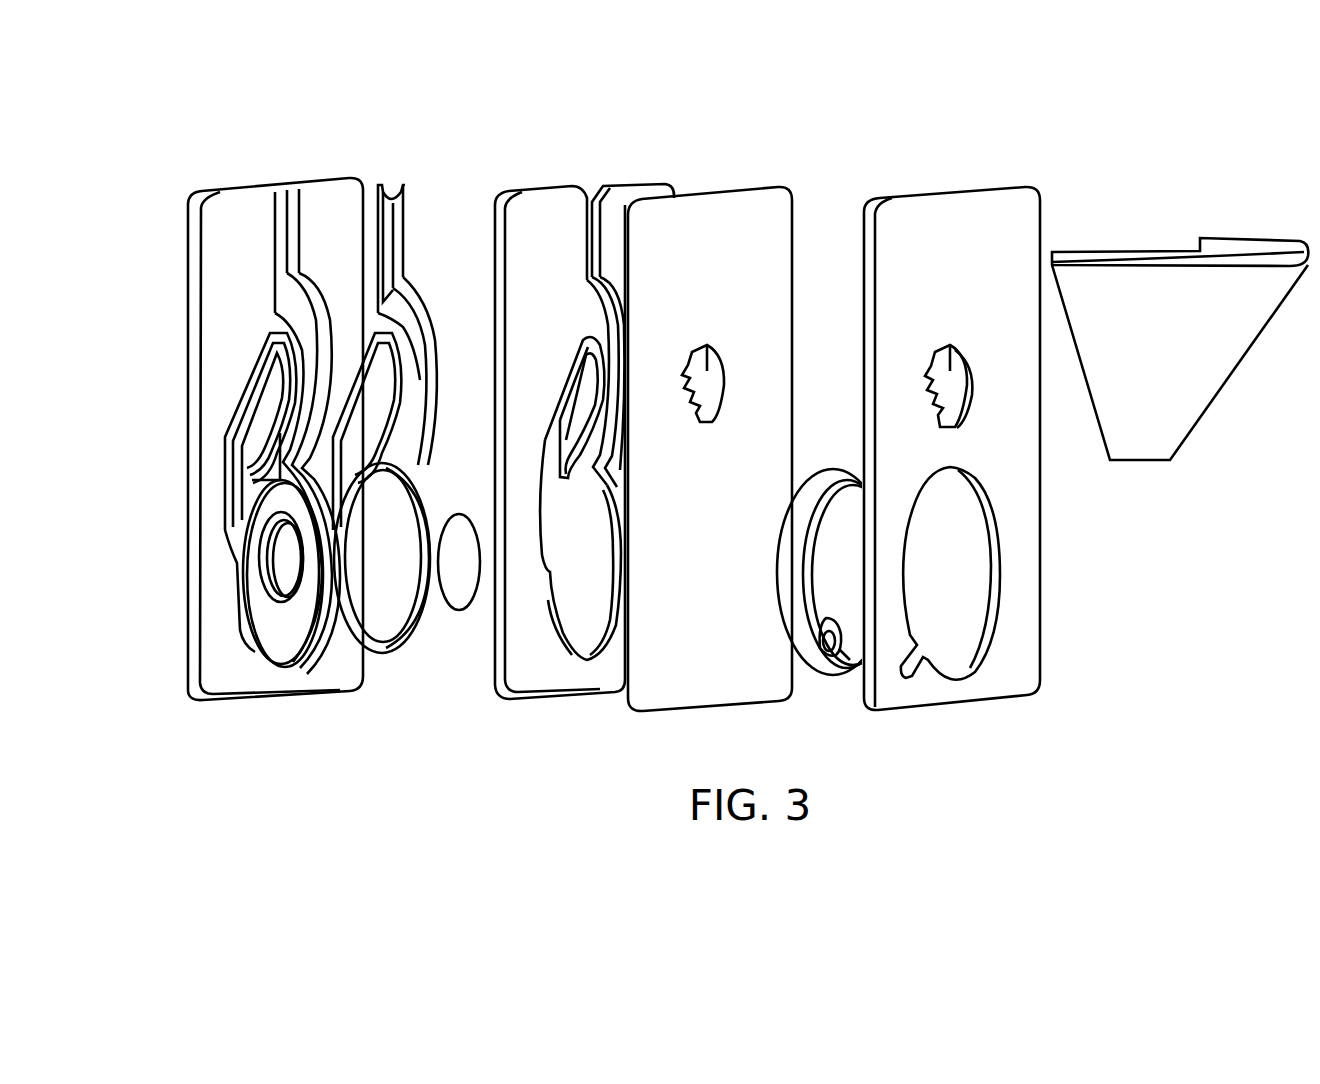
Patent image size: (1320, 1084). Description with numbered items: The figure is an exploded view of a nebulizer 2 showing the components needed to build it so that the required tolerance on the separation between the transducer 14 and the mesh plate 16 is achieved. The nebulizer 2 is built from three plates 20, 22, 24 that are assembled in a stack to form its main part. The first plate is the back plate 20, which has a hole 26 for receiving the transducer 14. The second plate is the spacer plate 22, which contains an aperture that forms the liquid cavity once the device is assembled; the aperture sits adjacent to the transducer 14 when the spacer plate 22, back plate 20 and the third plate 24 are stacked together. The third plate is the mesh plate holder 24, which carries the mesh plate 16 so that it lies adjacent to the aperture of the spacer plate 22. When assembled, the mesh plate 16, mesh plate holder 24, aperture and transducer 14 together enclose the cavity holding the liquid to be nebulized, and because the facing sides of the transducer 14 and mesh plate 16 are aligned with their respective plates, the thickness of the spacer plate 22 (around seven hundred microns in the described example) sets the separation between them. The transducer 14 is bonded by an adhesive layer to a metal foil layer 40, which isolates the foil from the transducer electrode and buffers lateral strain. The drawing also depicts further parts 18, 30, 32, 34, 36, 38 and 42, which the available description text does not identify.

The nebulizer 2 is at (203, 132).
The transducer 14 is at (843, 655).
The mesh plate 16 is at (460, 605).
The funnel housing 18 is at (1241, 243).
The back plate 20 is at (952, 450).
The spacer plate 22 is at (557, 450).
The mesh plate holder 24 is at (275, 450).
The hole 26 is at (966, 588).
The protrusion 30 is at (950, 345).
The hook-shaped cutout 32 is at (548, 456).
The slot 34 is at (590, 287).
The ring insert 36 is at (400, 655).
The slot 38 is at (284, 190).
The foil layer 40 is at (710, 450).
The protrusion 42 is at (706, 345).